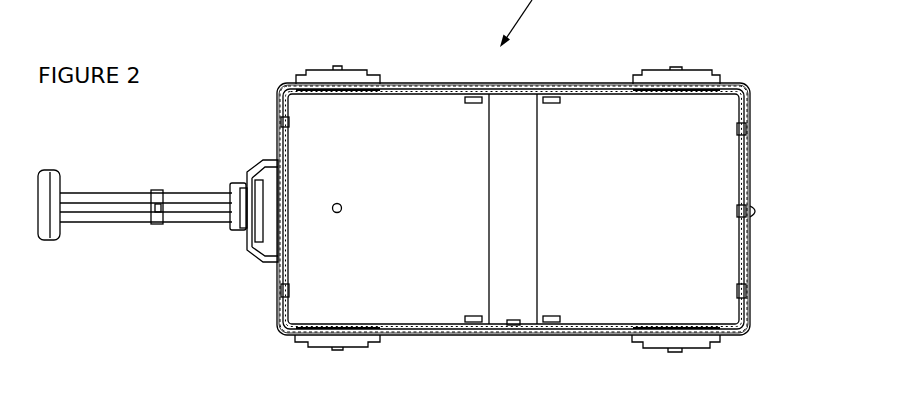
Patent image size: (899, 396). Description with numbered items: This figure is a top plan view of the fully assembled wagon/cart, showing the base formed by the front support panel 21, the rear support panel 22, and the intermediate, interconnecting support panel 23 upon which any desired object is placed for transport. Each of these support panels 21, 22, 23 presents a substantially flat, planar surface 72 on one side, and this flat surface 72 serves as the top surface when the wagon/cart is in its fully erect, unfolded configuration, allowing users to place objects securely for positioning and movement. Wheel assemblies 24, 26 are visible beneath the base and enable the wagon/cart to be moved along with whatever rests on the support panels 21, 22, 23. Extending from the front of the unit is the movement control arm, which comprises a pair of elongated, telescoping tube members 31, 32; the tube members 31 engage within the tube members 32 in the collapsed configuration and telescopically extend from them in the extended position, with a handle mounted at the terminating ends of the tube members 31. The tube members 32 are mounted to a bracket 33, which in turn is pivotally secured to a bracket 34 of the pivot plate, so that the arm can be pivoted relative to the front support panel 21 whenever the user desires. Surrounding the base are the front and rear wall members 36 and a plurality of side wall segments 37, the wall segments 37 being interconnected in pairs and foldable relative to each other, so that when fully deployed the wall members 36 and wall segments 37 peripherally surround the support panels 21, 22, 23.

The front support panel 21 is at (414, 190).
The rear support panel 22 is at (659, 193).
The intermediate, interconnecting support panel 23 is at (508, 145).
The wheel assembly 24 is at (322, 345).
The wheel assembly 26 is at (655, 340).
The telescoping tube member 31 is at (100, 197).
The telescoping tube member 32 is at (188, 193).
The bracket 33 is at (237, 231).
The bracket 34 is at (267, 161).
The front and rear wall member 36 is at (290, 183).
The side wall segment 37 is at (408, 93).
The flat, planar surface 72 is at (323, 290).